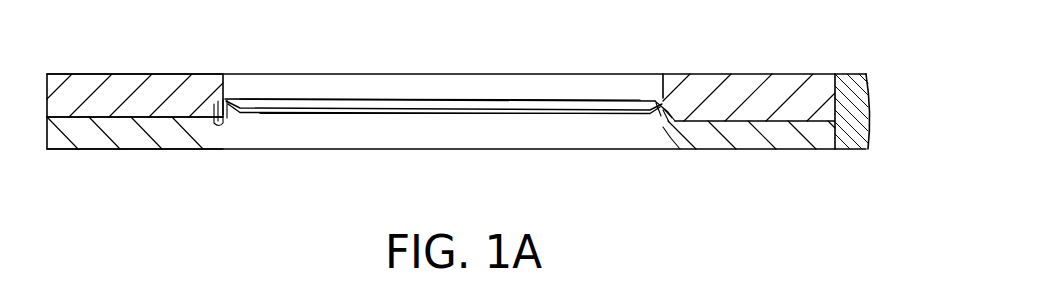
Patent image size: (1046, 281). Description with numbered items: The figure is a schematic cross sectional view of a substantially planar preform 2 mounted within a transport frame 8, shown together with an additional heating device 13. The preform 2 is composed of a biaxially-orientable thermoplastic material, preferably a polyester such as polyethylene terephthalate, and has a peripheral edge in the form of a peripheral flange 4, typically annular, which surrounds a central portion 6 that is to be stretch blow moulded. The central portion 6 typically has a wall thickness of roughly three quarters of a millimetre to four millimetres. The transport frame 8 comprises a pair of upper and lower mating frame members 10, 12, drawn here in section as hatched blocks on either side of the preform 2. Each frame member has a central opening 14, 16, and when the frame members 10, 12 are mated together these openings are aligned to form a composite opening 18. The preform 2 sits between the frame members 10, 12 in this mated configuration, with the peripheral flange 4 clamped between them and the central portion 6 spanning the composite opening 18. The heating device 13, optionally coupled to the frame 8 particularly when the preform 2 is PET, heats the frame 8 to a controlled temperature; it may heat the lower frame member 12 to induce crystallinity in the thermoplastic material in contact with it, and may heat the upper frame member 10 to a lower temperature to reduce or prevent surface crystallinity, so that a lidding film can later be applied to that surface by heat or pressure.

The preform 2 is at (473, 93).
The peripheral flange 4 is at (662, 122).
The central portion 6 is at (435, 116).
The transport frame 8 is at (738, 85).
The upper frame member 10 is at (131, 80).
The lower frame member 12 is at (136, 140).
The heating device 13 is at (870, 103).
The central opening 14 is at (657, 92).
The central opening 16 is at (202, 147).
The composite opening 18 is at (393, 86).